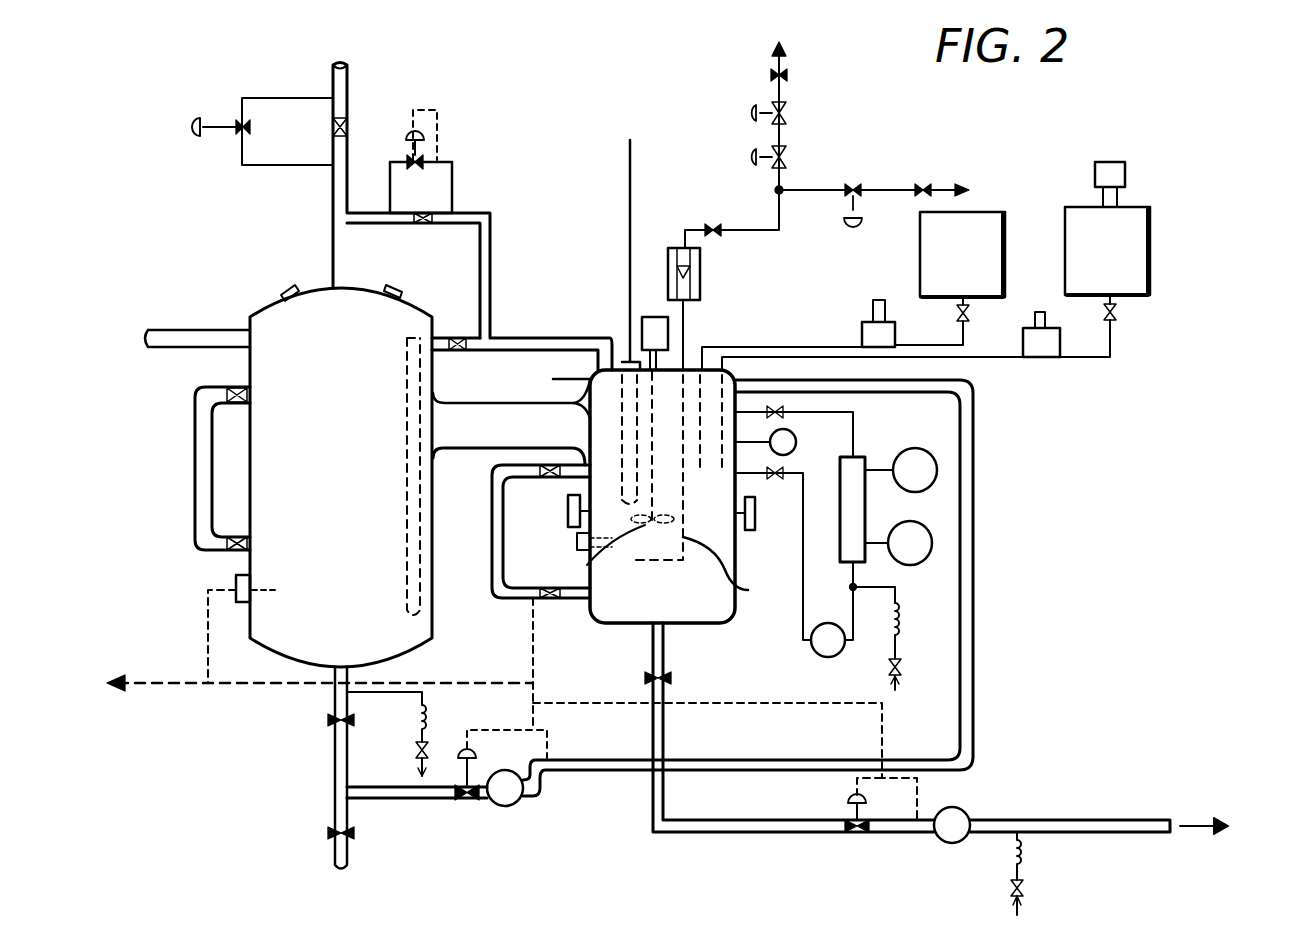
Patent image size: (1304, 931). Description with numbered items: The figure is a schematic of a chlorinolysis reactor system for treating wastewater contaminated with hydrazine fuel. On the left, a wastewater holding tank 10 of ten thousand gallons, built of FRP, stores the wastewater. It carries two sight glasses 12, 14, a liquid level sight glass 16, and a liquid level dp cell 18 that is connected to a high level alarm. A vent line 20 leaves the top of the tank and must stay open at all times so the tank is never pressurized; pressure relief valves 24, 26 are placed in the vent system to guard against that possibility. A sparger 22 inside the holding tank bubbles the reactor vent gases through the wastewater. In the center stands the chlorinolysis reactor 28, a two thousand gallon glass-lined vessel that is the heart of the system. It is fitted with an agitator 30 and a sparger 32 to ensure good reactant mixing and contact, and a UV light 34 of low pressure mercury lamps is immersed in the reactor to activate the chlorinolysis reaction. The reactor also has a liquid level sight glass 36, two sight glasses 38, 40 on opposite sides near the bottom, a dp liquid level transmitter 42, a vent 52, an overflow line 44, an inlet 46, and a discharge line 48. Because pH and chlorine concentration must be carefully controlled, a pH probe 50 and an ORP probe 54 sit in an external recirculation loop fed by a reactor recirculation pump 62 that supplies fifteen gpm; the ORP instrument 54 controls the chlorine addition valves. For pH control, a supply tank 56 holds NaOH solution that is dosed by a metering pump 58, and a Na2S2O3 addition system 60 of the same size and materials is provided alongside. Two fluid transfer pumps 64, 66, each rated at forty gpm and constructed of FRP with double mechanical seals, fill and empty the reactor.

The wastewater holding tank 10 is at (248, 366).
The sight glass 12 is at (282, 290).
The sight glass 14 is at (395, 285).
The liquid level sight glass 16 is at (195, 466).
The liquid level dp cell 18 is at (234, 586).
The vent line 20 is at (350, 72).
The sparger 22 is at (436, 630).
The pressure relief valve 24 is at (410, 152).
The pressure relief valve 26 is at (214, 130).
The chlorinolysis reactor 28 is at (700, 630).
The agitator 30 is at (585, 563).
The sparger 32 is at (748, 590).
The UV light 34 is at (575, 401).
The liquid level sight glass 36 is at (492, 556).
The sight glass 38 is at (566, 511).
The sight glass 40 is at (757, 505).
The dp liquid level transmitter 42 is at (796, 447).
The overflow line 44 is at (975, 648).
The inlet 46 is at (600, 336).
The discharge line 48 is at (690, 830).
The pH probe 50 is at (935, 450).
The vent 52 is at (702, 283).
The ORP probe 54 is at (910, 566).
The supply tank 56 is at (918, 265).
The metering pump 58 is at (860, 340).
The Na2S2O3 addition system 60 is at (1152, 265).
The reactor recirculation pump 62 is at (814, 650).
The fluid transfer pump 64 is at (510, 806).
The fluid transfer pump 66 is at (940, 840).